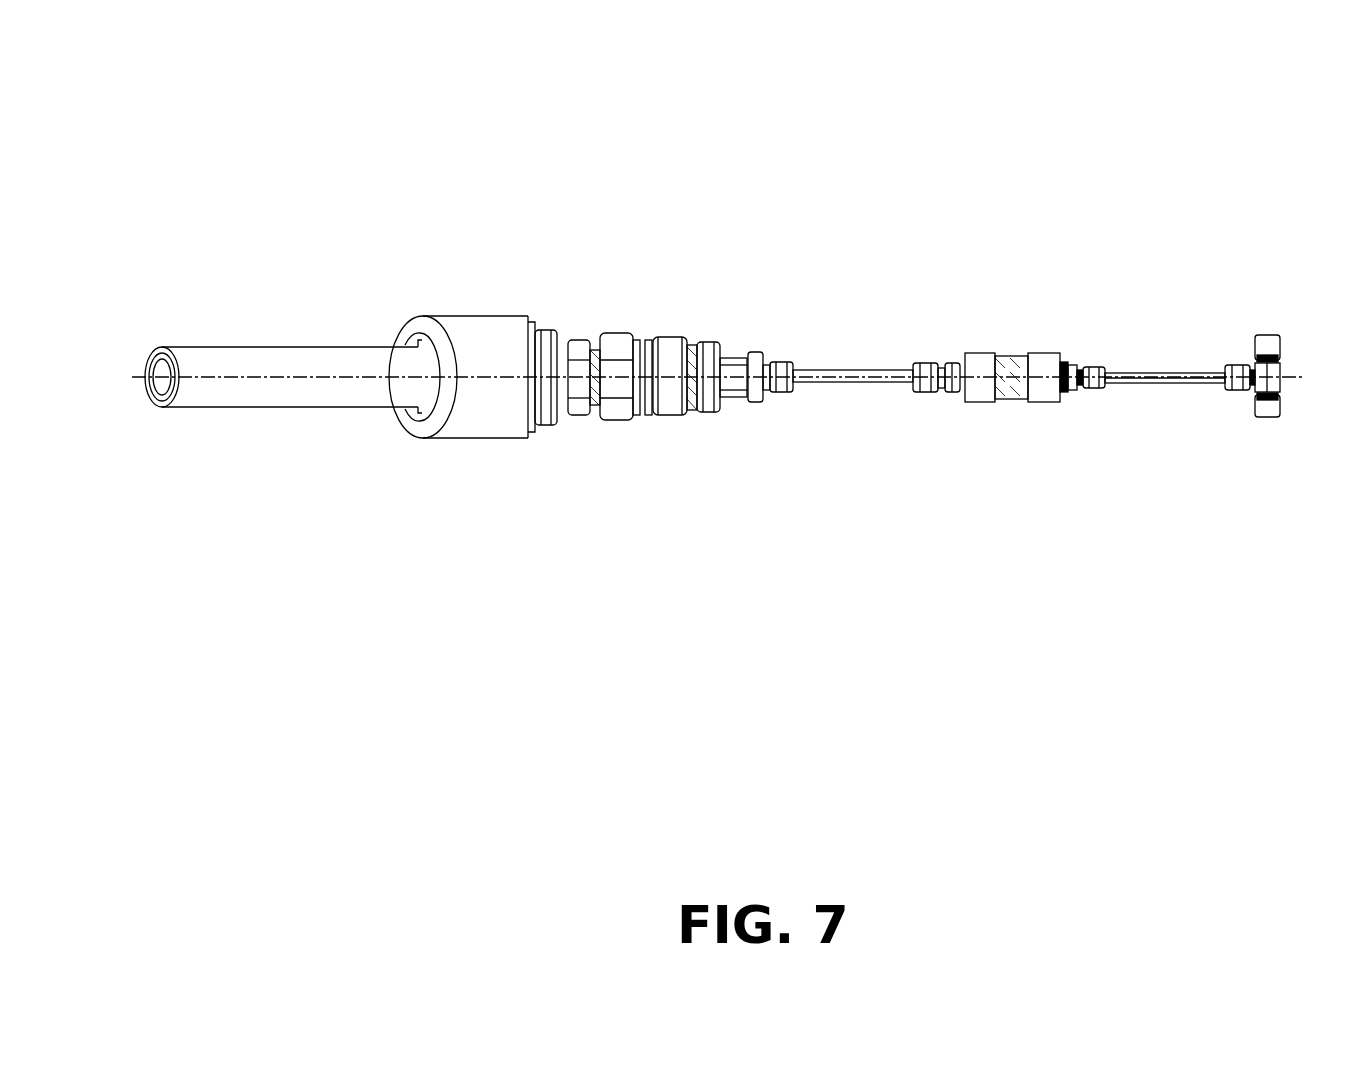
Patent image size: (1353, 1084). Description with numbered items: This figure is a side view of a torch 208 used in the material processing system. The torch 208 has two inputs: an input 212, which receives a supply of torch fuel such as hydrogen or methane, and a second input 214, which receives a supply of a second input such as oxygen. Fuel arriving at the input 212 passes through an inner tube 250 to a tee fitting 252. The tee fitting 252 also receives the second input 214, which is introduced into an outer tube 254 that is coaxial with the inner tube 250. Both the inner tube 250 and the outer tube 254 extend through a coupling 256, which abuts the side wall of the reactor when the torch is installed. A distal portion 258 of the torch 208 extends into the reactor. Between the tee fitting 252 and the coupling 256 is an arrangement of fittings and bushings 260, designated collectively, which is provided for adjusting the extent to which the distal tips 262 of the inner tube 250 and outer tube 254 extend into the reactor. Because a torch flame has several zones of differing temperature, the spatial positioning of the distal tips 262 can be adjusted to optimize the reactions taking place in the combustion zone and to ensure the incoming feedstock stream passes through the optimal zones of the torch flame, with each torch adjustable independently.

The torch 208 is at (961, 122).
The input 212 is at (1262, 335).
The second input 214 is at (1018, 354).
The inner tube 250 is at (1170, 372).
The tee fitting 252 is at (1042, 402).
The outer tube 254 is at (850, 368).
The coupling 256 is at (475, 317).
The distal portion 258 is at (158, 335).
The arrangement of fittings and bushings 260 is at (568, 323).
The distal tips 262 is at (166, 372).